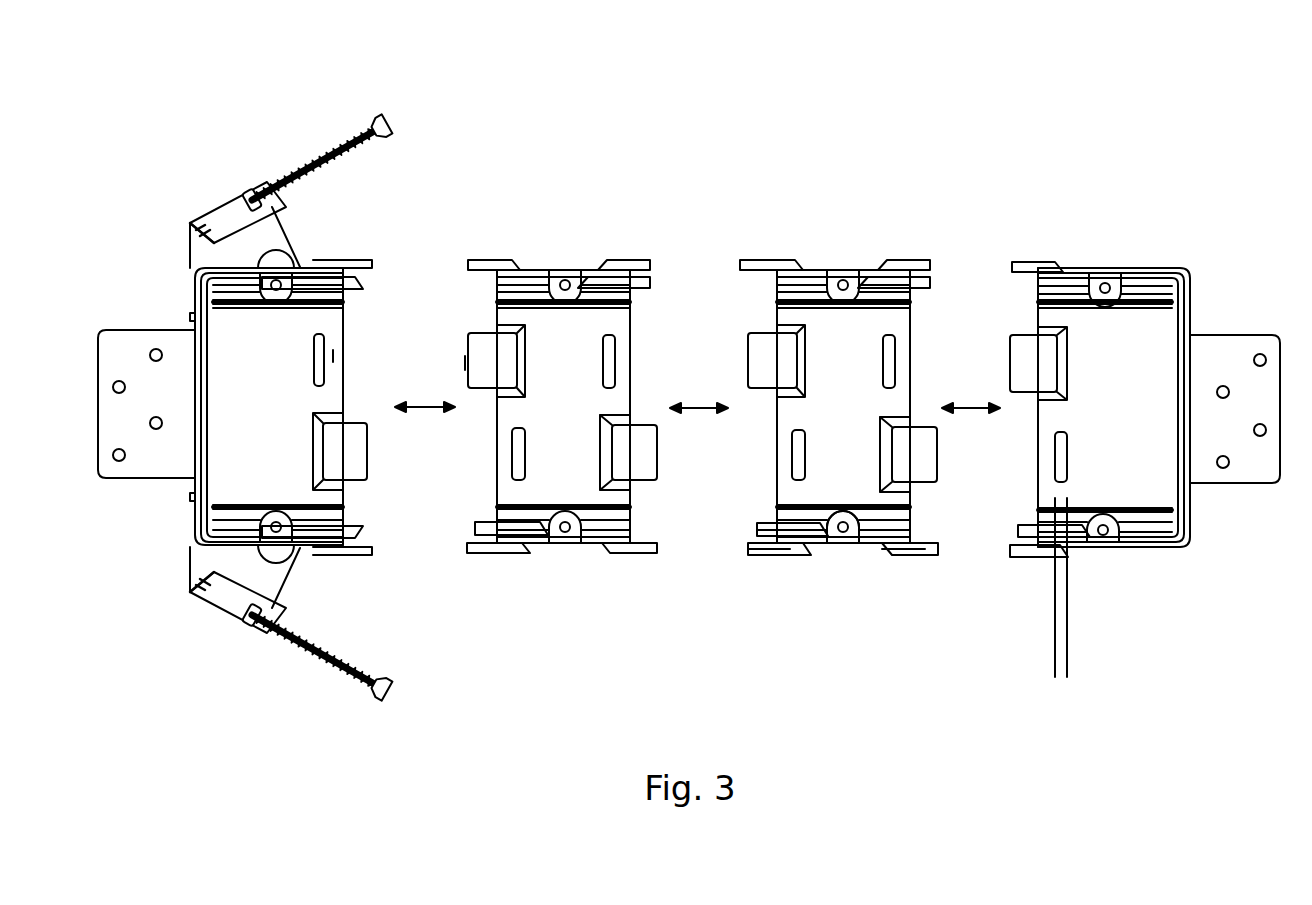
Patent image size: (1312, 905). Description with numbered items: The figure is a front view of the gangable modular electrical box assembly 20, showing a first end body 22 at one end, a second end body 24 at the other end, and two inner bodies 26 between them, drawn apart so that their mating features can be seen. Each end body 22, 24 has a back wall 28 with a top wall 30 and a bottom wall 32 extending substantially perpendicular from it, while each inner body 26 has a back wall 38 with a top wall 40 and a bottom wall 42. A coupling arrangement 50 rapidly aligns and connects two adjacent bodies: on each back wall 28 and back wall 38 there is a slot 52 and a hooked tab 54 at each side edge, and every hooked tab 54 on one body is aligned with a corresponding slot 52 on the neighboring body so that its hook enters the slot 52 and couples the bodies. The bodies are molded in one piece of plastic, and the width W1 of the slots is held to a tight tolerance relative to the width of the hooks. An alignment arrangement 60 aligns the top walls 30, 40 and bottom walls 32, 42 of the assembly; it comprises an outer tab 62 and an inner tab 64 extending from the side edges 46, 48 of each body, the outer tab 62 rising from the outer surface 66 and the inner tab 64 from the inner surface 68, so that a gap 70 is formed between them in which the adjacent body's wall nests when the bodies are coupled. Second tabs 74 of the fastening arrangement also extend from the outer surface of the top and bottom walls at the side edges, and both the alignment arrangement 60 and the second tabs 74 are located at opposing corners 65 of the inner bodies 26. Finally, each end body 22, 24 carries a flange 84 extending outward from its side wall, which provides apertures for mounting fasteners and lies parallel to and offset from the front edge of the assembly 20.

The gangable modular electrical box assembly 20 is at (205, 135).
The first end body 22 is at (392, 245).
The second end body 24 is at (1207, 258).
The inner body 26 is at (672, 250).
The back wall 28 is at (253, 406).
The top wall 30 is at (297, 272).
The bottom wall 32 is at (532, 273).
The back wall 38 is at (558, 409).
The top wall 40 is at (293, 542).
The bottom wall 42 is at (515, 537).
The side edge 46 is at (343, 495).
The side edge 48 is at (490, 490).
The coupling arrangement 50 is at (465, 363).
The slot 52 is at (318, 372).
The hooked tab 54 is at (487, 390).
The alignment arrangement 60 is at (942, 280).
The outer tab 62 is at (763, 558).
The inner tab 64 is at (757, 527).
The opposing corners 65 is at (915, 270).
The outer surface 66 is at (873, 548).
The inner surface 68 is at (815, 532).
The gap 70 is at (753, 537).
The second tab 74 is at (770, 260).
The flange 84 is at (1225, 485).
The width of the slots W1 is at (1123, 635).